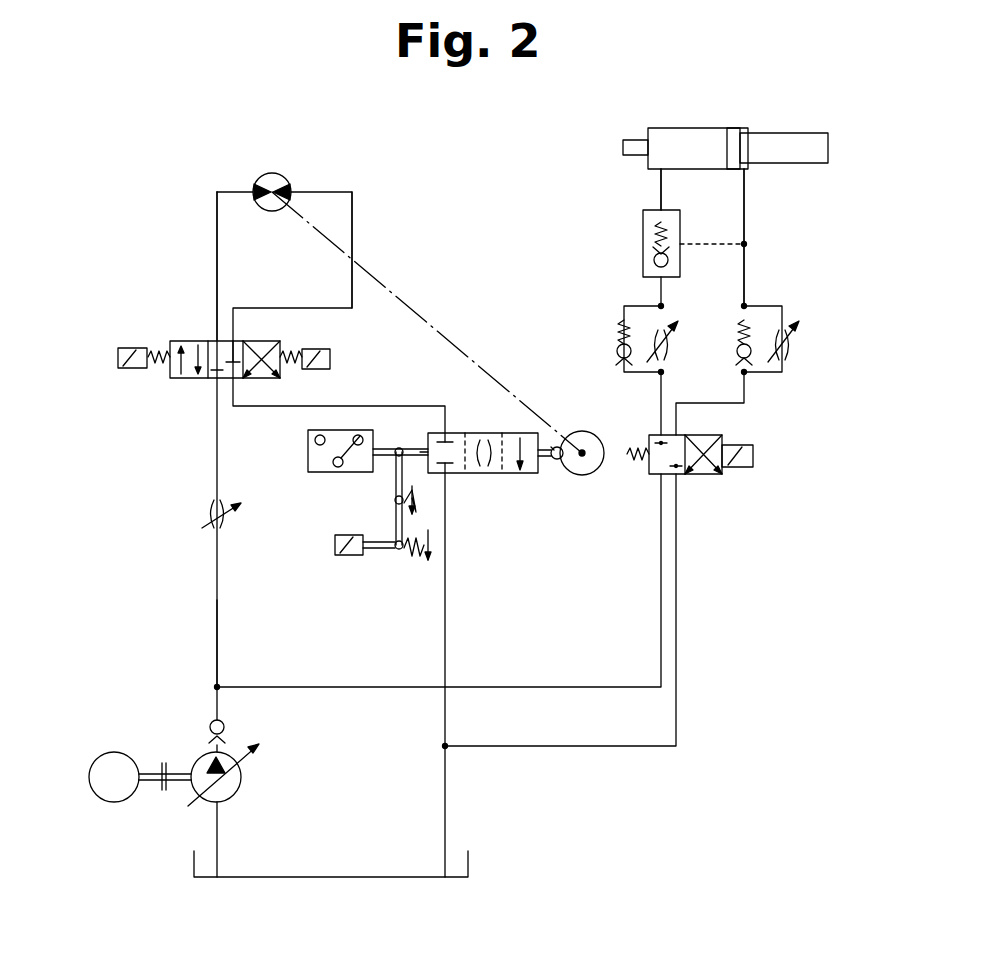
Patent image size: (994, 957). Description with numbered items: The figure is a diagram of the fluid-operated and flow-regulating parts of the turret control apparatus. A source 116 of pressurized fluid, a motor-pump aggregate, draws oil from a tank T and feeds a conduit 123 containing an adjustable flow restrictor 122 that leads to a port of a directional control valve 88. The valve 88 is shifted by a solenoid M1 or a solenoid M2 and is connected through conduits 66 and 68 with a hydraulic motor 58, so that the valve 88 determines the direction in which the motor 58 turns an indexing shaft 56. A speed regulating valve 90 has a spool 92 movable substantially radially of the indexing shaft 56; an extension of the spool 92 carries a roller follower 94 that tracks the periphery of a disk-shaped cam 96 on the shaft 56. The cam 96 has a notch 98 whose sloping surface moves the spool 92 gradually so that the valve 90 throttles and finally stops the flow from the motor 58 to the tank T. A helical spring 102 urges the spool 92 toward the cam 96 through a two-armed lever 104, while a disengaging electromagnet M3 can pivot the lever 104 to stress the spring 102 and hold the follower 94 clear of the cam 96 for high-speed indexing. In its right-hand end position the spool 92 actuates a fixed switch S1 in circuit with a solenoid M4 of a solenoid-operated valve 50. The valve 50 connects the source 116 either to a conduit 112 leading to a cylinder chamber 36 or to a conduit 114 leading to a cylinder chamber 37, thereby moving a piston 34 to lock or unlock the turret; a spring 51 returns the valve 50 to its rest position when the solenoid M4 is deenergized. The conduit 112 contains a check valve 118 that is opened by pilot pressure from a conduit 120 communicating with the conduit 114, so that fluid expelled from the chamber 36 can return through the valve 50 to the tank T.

The piston 34 is at (731, 130).
The cylinder chamber 36 is at (675, 128).
The cylinder chamber 37 is at (750, 133).
The solenoid-operated valve 50 is at (703, 475).
The spring 51 is at (632, 452).
The indexing shaft 56 is at (438, 337).
The hydraulic motor 58 is at (284, 176).
The conduit 66 is at (217, 224).
The conduit 68 is at (352, 226).
The directional control valve 88 is at (180, 345).
The speed regulating valve 90 is at (493, 474).
The spool 92 is at (547, 460).
The roller follower 94 is at (563, 461).
The cam 96 is at (596, 474).
The notch 98 is at (553, 446).
The helical spring 102 is at (412, 556).
The two-armed lever 104 is at (396, 476).
The conduit 112 is at (661, 187).
The conduit 114 is at (744, 210).
The source of pressurized fluid 116 is at (164, 756).
The check valve 118 is at (643, 235).
The conduit 120 is at (713, 225).
The adjustable flow restrictor 122 is at (208, 522).
The conduit 123 is at (217, 659).
The solenoid M1 is at (122, 370).
The electromagnet M2 is at (329, 357).
The disengaging electromagnet M3 is at (338, 557).
The solenoid M4 is at (754, 463).
The switch S1 is at (315, 472).
The tank T is at (364, 879).